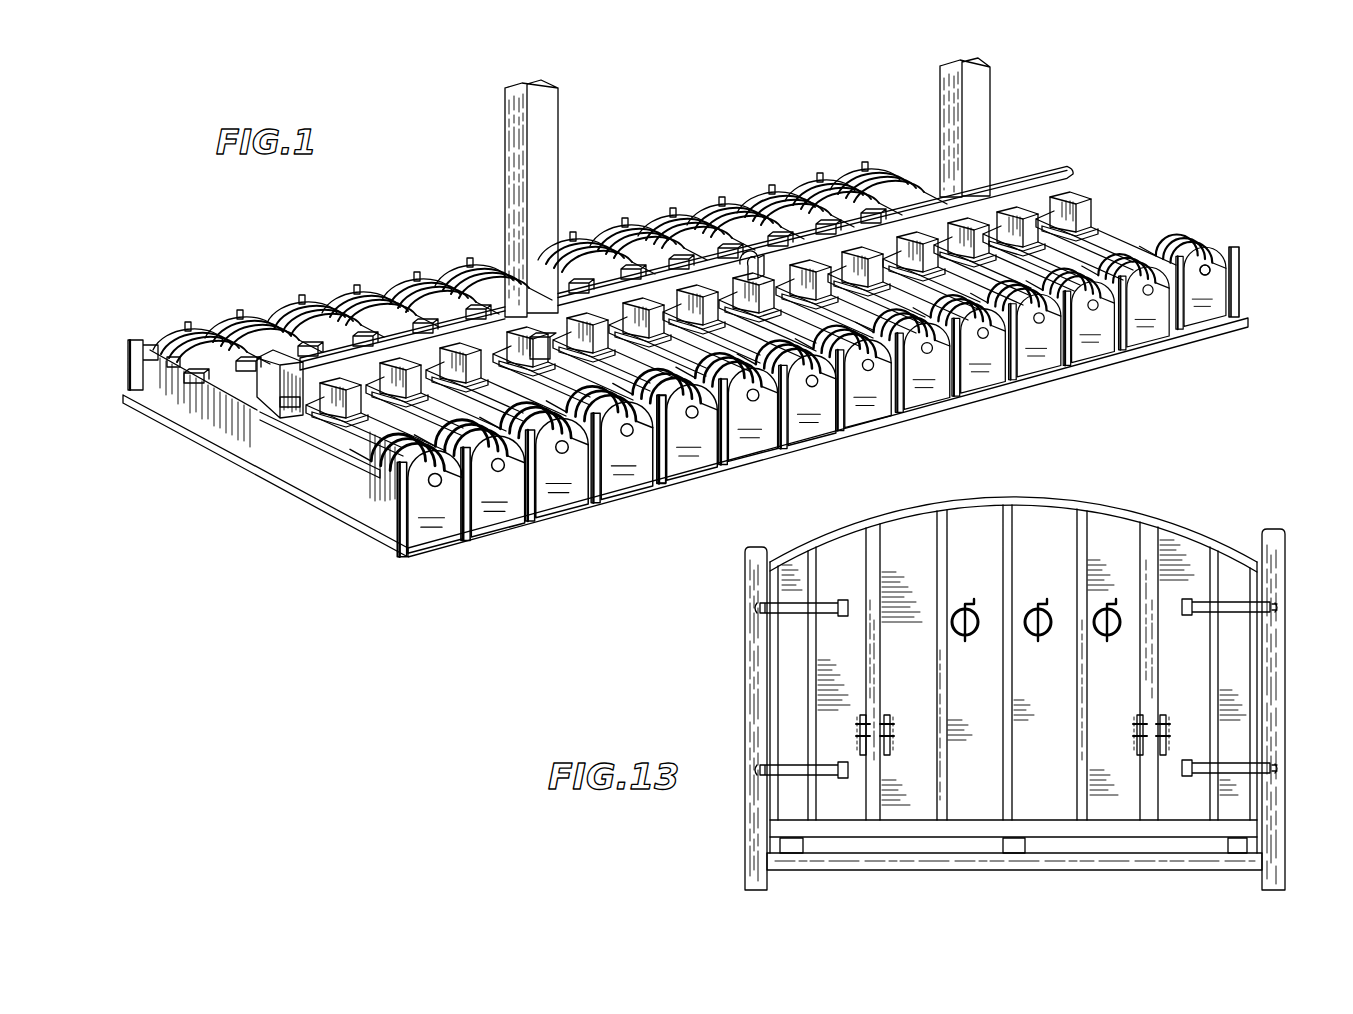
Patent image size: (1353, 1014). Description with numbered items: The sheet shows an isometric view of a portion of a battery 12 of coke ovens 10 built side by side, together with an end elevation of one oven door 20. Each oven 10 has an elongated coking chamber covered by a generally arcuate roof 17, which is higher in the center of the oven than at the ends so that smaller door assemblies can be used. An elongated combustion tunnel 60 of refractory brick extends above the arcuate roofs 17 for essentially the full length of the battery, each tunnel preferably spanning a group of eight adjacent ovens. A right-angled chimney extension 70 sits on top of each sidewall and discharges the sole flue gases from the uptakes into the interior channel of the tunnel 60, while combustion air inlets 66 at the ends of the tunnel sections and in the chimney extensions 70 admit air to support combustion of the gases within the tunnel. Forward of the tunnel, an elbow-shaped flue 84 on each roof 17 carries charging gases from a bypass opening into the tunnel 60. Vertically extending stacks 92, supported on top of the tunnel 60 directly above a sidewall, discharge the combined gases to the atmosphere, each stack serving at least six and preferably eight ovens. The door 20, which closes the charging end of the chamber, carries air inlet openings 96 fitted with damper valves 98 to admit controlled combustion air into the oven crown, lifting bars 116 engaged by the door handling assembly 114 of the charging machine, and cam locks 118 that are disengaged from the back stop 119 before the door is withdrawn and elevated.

In FIG. 1, the coke oven 10 is at (563, 478).
In FIG. 1, the battery 12 is at (637, 192).
In FIG. 1, the arcuate roof 17 is at (357, 445).
In FIG. 1, the door 20 is at (435, 497).
In FIG. 13, the door 20 is at (1066, 514).
In FIG. 1, the combustion tunnel 60 is at (1013, 181).
In FIG. 1, the combustion air inlet 66 is at (748, 258).
In FIG. 1, the chimney extension 70 is at (262, 393).
In FIG. 1, the elbow-shaped flue 84 is at (1090, 210).
In FIG. 1, the stack 92 is at (553, 148).
In FIG. 1, the air inlet opening 96 is at (1212, 264).
In FIG. 13, the air inlet opening 96 is at (1046, 640).
In FIG. 13, the damper valve 98 is at (1038, 602).
In FIG. 13, the door handling assembly 114 is at (893, 744).
In FIG. 13, the lifting bar 116 is at (893, 722).
In FIG. 13, the cam lock 118 is at (828, 603).
In FIG. 1, the back stop 119 is at (667, 473).
In FIG. 13, the back stop 119 is at (745, 710).